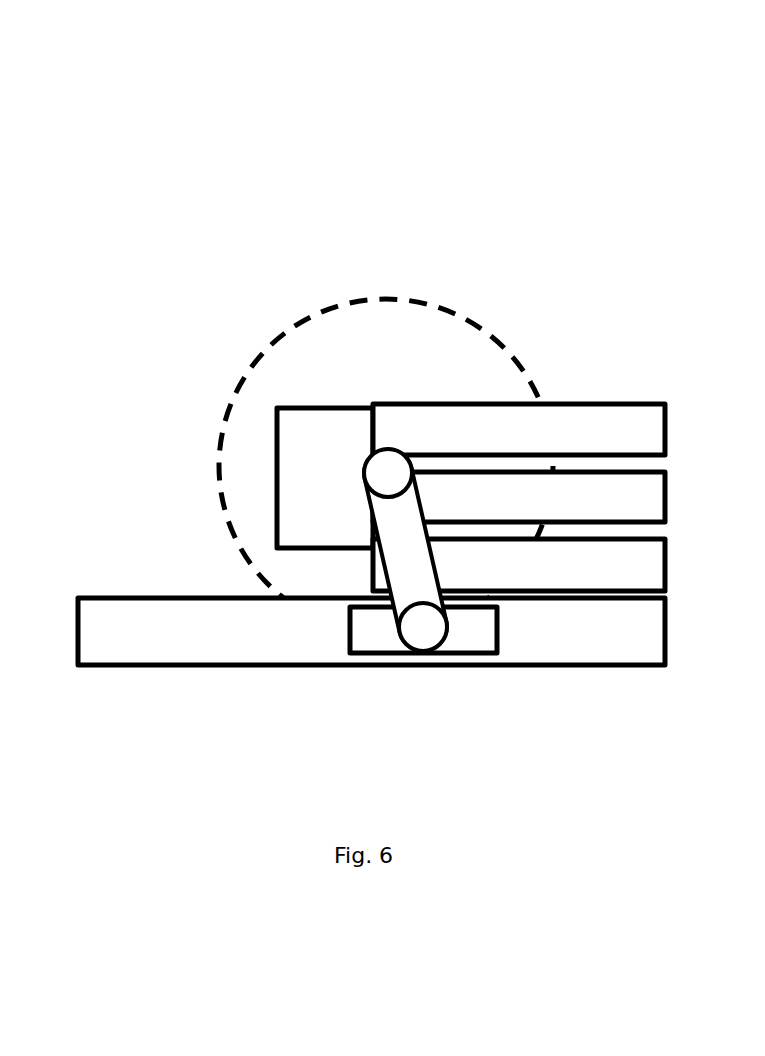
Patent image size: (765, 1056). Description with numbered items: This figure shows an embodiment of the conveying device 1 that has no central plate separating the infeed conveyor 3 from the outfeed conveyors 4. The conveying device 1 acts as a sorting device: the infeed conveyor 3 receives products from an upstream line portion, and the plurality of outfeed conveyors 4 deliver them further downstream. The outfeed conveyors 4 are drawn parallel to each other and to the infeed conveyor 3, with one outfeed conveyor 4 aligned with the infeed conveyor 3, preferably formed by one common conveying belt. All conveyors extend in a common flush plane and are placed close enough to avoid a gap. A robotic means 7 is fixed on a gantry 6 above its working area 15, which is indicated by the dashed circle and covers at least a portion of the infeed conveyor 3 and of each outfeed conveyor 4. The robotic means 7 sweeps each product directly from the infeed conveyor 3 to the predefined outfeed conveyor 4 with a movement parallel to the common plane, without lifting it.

The conveying device 1 is at (221, 126).
The infeed conveyor 3 is at (179, 631).
The outfeed conveyors 4 is at (545, 639).
The gantry 6 is at (297, 450).
The robotic means 7 is at (403, 520).
The working area 15 is at (249, 313).